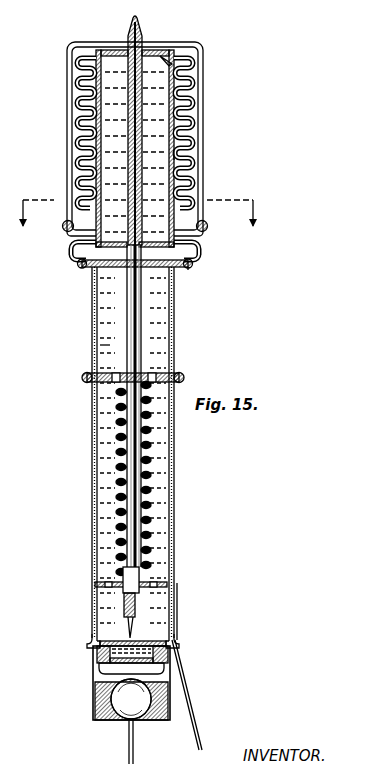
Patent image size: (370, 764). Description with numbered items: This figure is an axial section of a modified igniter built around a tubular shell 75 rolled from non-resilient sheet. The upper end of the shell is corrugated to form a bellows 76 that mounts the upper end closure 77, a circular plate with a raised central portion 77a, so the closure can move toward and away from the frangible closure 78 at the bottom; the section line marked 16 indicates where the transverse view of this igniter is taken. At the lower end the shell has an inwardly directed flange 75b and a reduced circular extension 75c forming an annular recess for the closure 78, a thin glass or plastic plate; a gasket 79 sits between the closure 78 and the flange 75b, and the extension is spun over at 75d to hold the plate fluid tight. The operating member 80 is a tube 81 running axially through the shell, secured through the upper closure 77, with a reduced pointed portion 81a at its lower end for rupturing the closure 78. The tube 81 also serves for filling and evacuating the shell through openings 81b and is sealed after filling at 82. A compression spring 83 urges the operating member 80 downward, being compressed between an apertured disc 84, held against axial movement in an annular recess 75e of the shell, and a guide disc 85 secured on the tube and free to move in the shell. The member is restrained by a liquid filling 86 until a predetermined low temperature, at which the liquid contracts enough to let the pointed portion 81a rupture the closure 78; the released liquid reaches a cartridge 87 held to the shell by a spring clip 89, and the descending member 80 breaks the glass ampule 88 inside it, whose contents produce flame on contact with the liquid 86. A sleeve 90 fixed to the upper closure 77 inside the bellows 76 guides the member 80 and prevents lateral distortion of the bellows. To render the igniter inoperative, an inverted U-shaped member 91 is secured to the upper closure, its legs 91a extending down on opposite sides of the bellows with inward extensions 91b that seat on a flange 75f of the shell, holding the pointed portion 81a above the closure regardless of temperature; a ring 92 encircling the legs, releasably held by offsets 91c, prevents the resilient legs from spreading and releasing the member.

The section line 16- 16 is at (141, 226).
The tubular shell 75 is at (177, 472).
The inwardly directed flange 75b is at (171, 642).
The reduced circular extension 75c is at (100, 655).
The spun-over portion 75d is at (165, 670).
The annular recess 75e is at (88, 381).
The flange 75f is at (188, 270).
The bellows 76 is at (184, 128).
The upper end closure 77 is at (183, 54).
The raised central portion 77a is at (118, 50).
The frangible closure 78 is at (110, 673).
The gasket 79 is at (156, 656).
The operating member 80 is at (143, 326).
The tube 81 is at (131, 321).
The reduced pointed portion 81a is at (128, 629).
The openings 81b is at (149, 53).
The seal 82 is at (137, 24).
The compression spring 83 is at (146, 443).
The apertured disc 84 is at (177, 374).
The guide disc 85 is at (167, 584).
The liquid filling 86 is at (100, 345).
The cartridge 87 is at (170, 701).
The glass ampule 88 is at (121, 719).
The spring clip 89 is at (134, 754).
The sleeve 90 is at (163, 157).
The inverted U-shaped member 91 is at (205, 91).
The legs 91a is at (67, 163).
The inward extension 91b is at (80, 266).
The offsets 91c is at (197, 245).
The ring 92 is at (63, 227).